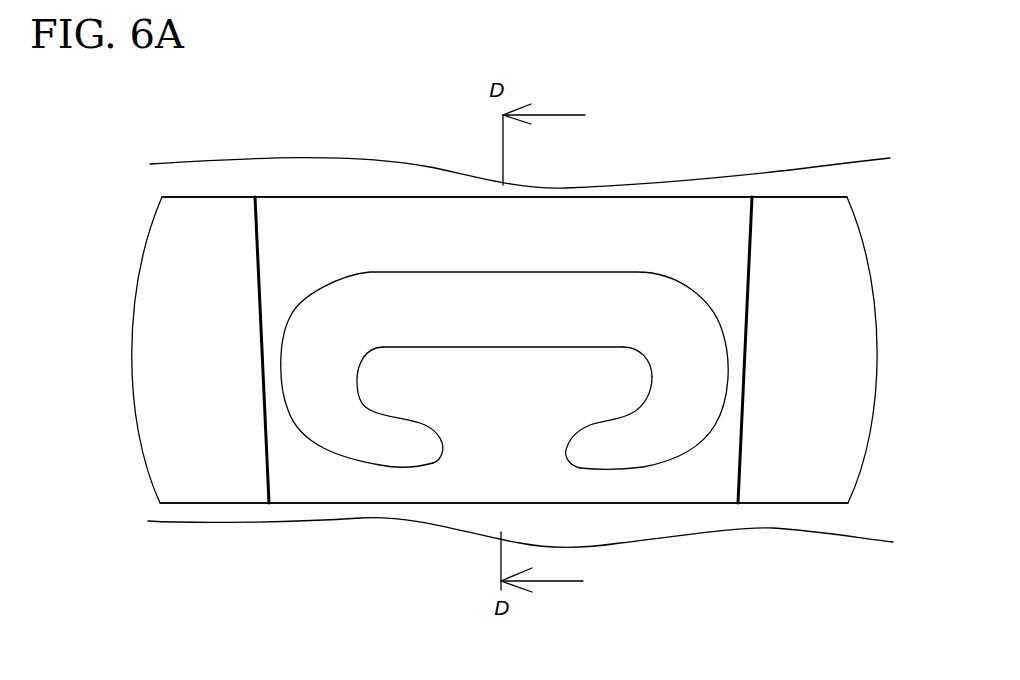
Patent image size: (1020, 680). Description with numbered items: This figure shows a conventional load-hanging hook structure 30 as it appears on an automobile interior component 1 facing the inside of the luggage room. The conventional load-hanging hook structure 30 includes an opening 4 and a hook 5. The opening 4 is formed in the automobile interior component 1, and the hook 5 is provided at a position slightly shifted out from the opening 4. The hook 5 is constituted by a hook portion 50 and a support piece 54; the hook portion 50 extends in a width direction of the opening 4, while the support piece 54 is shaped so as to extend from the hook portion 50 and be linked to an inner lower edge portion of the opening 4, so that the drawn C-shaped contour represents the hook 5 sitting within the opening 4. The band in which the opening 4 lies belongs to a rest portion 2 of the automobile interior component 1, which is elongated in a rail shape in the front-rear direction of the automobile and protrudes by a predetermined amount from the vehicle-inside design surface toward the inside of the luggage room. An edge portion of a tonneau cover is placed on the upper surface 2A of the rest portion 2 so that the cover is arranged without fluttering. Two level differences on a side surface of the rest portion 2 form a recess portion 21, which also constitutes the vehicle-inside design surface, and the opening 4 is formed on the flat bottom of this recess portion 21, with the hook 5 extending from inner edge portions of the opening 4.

The automobile interior component 1 is at (152, 140).
The rest portion 2 is at (808, 190).
The upper surface 2A is at (716, 203).
The recess portion 21 is at (283, 197).
The conventional load-hanging hook structure 30 is at (712, 510).
The opening 4 is at (725, 383).
The hook 5 is at (648, 352).
The hook portion 50 is at (437, 365).
The support piece 54 is at (550, 451).